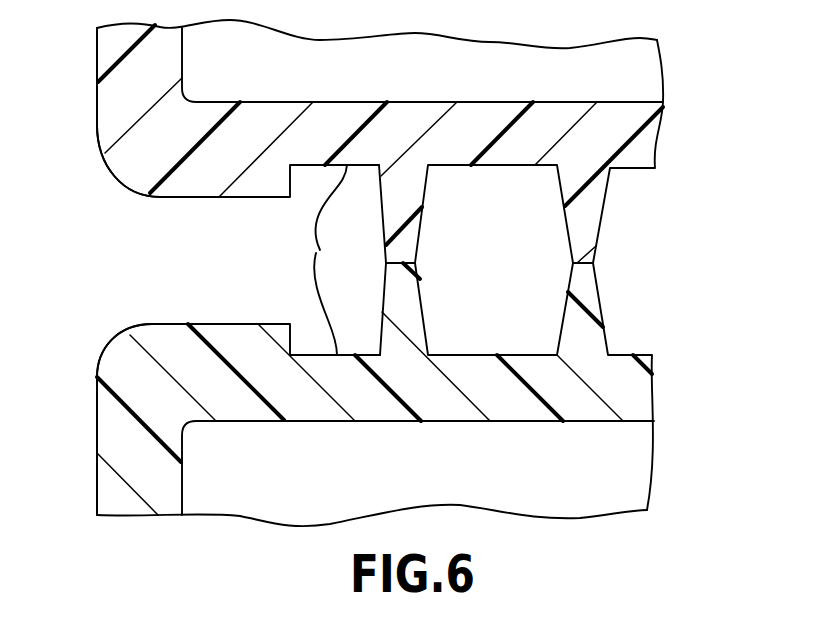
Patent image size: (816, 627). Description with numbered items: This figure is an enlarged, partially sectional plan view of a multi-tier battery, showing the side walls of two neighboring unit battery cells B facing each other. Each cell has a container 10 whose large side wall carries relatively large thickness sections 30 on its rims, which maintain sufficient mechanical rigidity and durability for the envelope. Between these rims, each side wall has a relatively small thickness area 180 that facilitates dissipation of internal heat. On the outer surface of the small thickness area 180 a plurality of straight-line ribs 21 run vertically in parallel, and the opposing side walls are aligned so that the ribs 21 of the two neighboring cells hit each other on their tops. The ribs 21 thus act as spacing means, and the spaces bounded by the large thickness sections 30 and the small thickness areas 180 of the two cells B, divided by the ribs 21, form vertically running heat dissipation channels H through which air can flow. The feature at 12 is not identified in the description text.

The container 10 is at (410, 86).
The edge of substrate 12 is at (109, 85).
The large thickness sections 30 is at (148, 163).
The small thickness area 180 is at (350, 260).
The straight-line ribs 21 is at (600, 233).
The unit battery cells B is at (107, 153).
The heat dissipation channels H is at (530, 206).